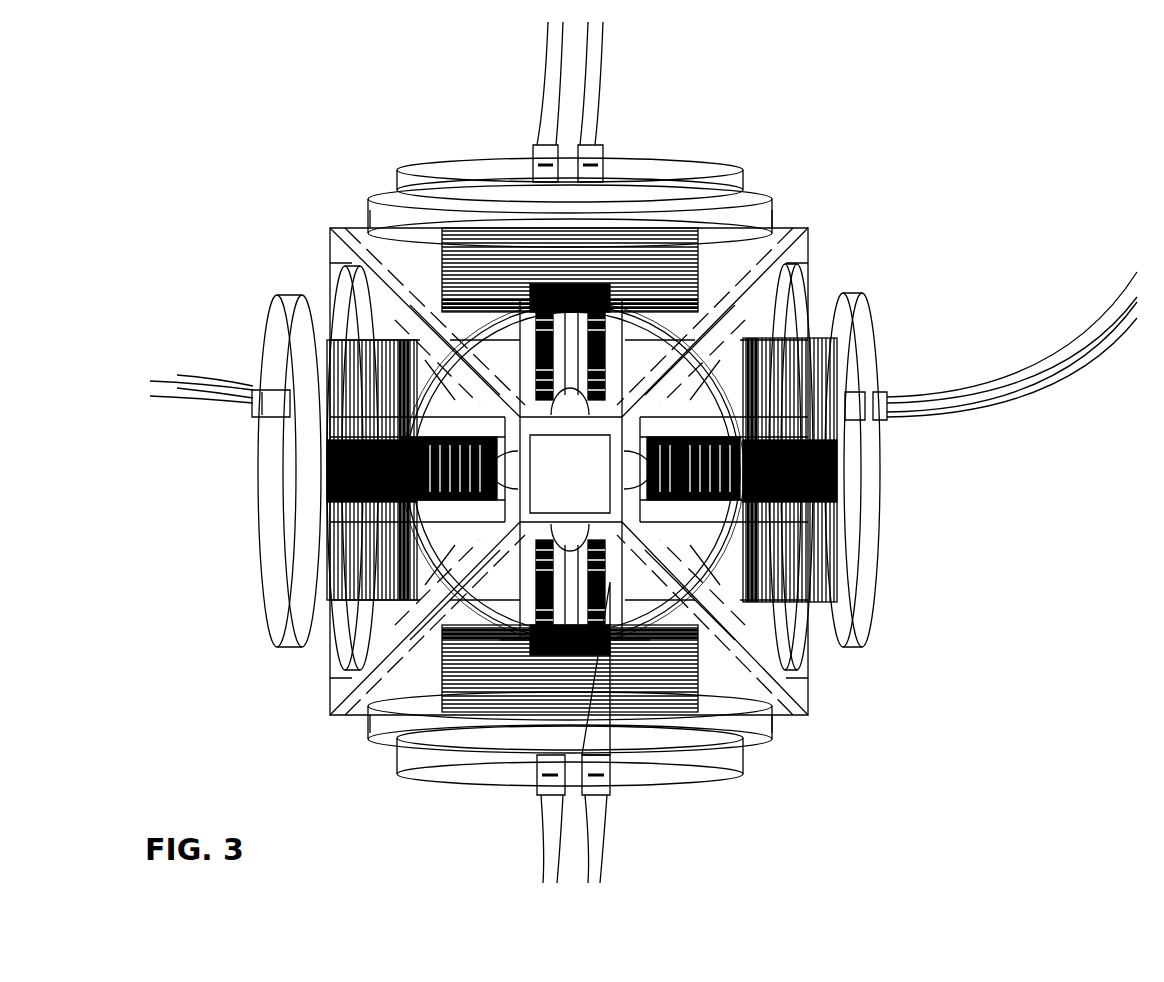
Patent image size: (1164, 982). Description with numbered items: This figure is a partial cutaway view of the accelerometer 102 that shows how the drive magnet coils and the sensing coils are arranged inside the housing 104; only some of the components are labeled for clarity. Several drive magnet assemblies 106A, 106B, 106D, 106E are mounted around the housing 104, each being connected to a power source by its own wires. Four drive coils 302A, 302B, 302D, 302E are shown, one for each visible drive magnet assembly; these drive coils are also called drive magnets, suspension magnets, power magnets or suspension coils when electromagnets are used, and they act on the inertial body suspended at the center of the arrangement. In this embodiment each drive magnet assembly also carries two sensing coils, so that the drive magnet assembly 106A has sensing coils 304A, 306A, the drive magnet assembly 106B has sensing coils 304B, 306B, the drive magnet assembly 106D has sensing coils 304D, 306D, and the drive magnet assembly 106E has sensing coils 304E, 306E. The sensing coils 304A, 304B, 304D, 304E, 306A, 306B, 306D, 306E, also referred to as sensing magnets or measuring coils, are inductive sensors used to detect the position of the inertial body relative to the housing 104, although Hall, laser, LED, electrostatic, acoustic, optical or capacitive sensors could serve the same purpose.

The accelerometer 102 is at (110, 88).
The housing 104 is at (810, 227).
The drive magnet assembly 106A is at (760, 185).
The drive magnet assembly 106B is at (305, 672).
The drive magnet assembly 106D is at (855, 655).
The drive magnet assembly 106E is at (770, 752).
The drive coil 302A is at (447, 232).
The drive coil 302B is at (328, 592).
The drive coil 302D is at (838, 540).
The drive coil 302E is at (707, 660).
The sensing coil 304A is at (532, 338).
The sensing coil 304B is at (458, 432).
The sensing coil 304D is at (688, 432).
The sensing coil 304E is at (604, 547).
The sensing coil 306A is at (606, 338).
The sensing coil 306B is at (306, 424).
The sensing coil 306D is at (844, 424).
The sensing coil 306E is at (533, 547).